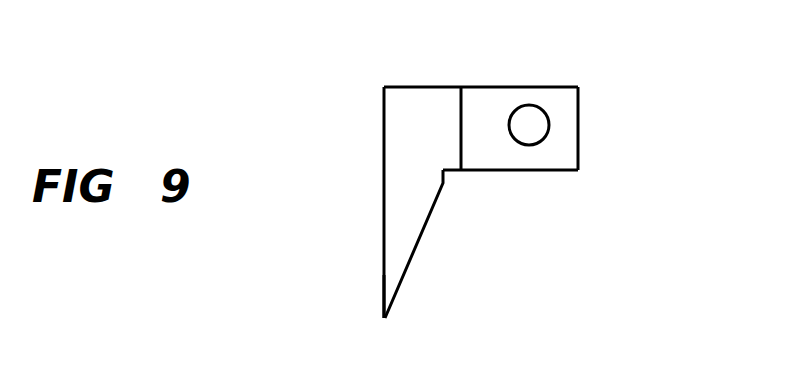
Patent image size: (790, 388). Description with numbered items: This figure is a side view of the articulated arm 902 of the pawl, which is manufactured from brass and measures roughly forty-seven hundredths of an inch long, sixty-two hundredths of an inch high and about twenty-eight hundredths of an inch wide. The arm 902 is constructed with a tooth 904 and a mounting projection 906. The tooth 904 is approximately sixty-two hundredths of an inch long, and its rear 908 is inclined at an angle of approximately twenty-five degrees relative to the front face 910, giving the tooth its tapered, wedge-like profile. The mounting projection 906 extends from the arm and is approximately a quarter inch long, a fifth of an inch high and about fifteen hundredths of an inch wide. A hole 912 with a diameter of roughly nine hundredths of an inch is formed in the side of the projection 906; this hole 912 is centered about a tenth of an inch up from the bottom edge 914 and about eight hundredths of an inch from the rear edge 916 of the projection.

The articulated arm 902 is at (405, 67).
The tooth 904 is at (388, 221).
The mounting projection 906 is at (577, 68).
The rear of the tooth 908 is at (423, 242).
The front face 910 is at (385, 275).
The hole 912 is at (535, 138).
The bottom edge 914 is at (498, 171).
The rear edge 916 is at (578, 143).